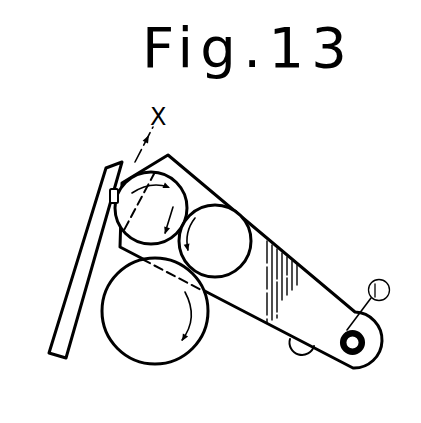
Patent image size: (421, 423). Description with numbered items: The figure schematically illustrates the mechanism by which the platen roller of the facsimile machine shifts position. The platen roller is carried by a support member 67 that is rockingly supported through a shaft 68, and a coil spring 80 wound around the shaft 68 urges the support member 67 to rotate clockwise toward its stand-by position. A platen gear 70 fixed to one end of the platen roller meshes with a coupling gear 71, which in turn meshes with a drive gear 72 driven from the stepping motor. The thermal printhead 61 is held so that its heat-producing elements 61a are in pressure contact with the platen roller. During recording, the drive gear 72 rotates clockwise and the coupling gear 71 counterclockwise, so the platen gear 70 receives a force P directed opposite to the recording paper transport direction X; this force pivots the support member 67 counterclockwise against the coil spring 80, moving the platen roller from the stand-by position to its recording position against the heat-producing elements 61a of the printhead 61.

The thermal printhead 61 is at (65, 300).
The heat-producing elements 61a is at (110, 194).
The support member 67 is at (313, 278).
The shaft 68 is at (352, 356).
The platen gear 70 is at (178, 181).
The coupling gear 71 is at (231, 231).
The drive gear 72 is at (192, 348).
The coil spring 80 is at (309, 358).